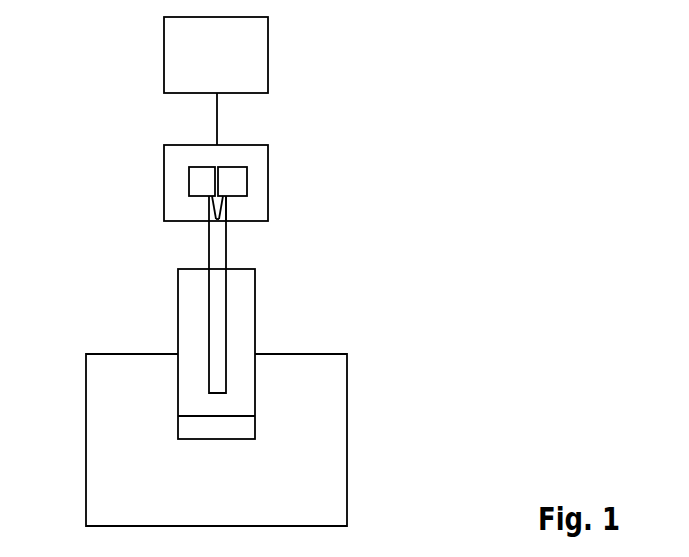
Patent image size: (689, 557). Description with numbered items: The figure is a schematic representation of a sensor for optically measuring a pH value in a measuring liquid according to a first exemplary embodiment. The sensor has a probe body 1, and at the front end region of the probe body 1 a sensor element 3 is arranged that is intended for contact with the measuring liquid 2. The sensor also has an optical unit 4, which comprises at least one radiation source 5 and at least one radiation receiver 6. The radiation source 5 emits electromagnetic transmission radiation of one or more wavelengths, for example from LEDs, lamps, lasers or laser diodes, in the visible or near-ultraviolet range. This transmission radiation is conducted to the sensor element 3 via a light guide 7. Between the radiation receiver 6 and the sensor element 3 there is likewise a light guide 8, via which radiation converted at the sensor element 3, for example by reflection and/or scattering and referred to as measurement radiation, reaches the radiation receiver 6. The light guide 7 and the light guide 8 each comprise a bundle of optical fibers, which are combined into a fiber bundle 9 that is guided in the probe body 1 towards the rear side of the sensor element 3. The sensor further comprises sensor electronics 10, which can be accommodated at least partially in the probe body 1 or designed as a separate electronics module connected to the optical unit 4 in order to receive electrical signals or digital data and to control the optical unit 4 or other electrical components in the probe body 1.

The probe body 1 is at (250, 322).
The measuring liquid 2 is at (327, 417).
The sensor element 3 is at (188, 433).
The optical unit 4 is at (245, 160).
The radiation source 5 is at (207, 180).
The radiation receiver 6 is at (240, 185).
The light guide 7 is at (210, 204).
The light guide 8 is at (225, 213).
The fiber bundle 9 is at (215, 292).
The sensor electronics 10 is at (252, 57).